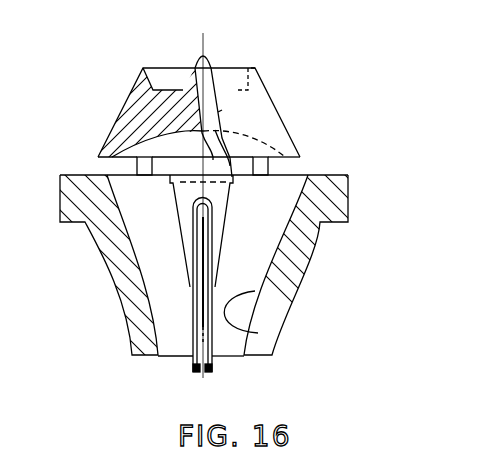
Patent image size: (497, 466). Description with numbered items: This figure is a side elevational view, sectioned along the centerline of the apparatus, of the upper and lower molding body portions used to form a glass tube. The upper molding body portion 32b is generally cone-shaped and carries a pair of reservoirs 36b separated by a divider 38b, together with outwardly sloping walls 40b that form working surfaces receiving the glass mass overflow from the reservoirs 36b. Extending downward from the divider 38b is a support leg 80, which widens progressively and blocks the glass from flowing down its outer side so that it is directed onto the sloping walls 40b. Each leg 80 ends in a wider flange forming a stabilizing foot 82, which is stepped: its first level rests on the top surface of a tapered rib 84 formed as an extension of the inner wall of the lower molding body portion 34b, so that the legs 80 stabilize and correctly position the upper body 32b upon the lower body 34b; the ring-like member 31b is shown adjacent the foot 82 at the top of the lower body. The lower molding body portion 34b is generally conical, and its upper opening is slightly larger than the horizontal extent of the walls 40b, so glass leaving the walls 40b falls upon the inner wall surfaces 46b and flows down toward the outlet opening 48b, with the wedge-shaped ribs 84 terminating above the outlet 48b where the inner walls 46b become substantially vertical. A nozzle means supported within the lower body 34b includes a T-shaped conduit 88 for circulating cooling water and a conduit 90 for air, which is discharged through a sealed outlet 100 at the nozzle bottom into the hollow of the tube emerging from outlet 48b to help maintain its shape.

The ring 31b is at (137, 156).
The upper molding body portion 32b is at (226, 94).
The lower molding body portion 34b is at (304, 256).
The reservoir 36b is at (163, 87).
The divider 38b is at (197, 60).
The outwardly sloping walls 40b is at (123, 110).
The inner wall surfaces 46b is at (258, 333).
The outlet opening 48b is at (232, 357).
The support leg 80 is at (222, 110).
The stabilizing foot 82 is at (268, 163).
The tapered rib 84 is at (182, 215).
The T-shaped conduit 88 is at (213, 218).
The air conduit 90 is at (207, 248).
The air outlet 100 is at (200, 377).